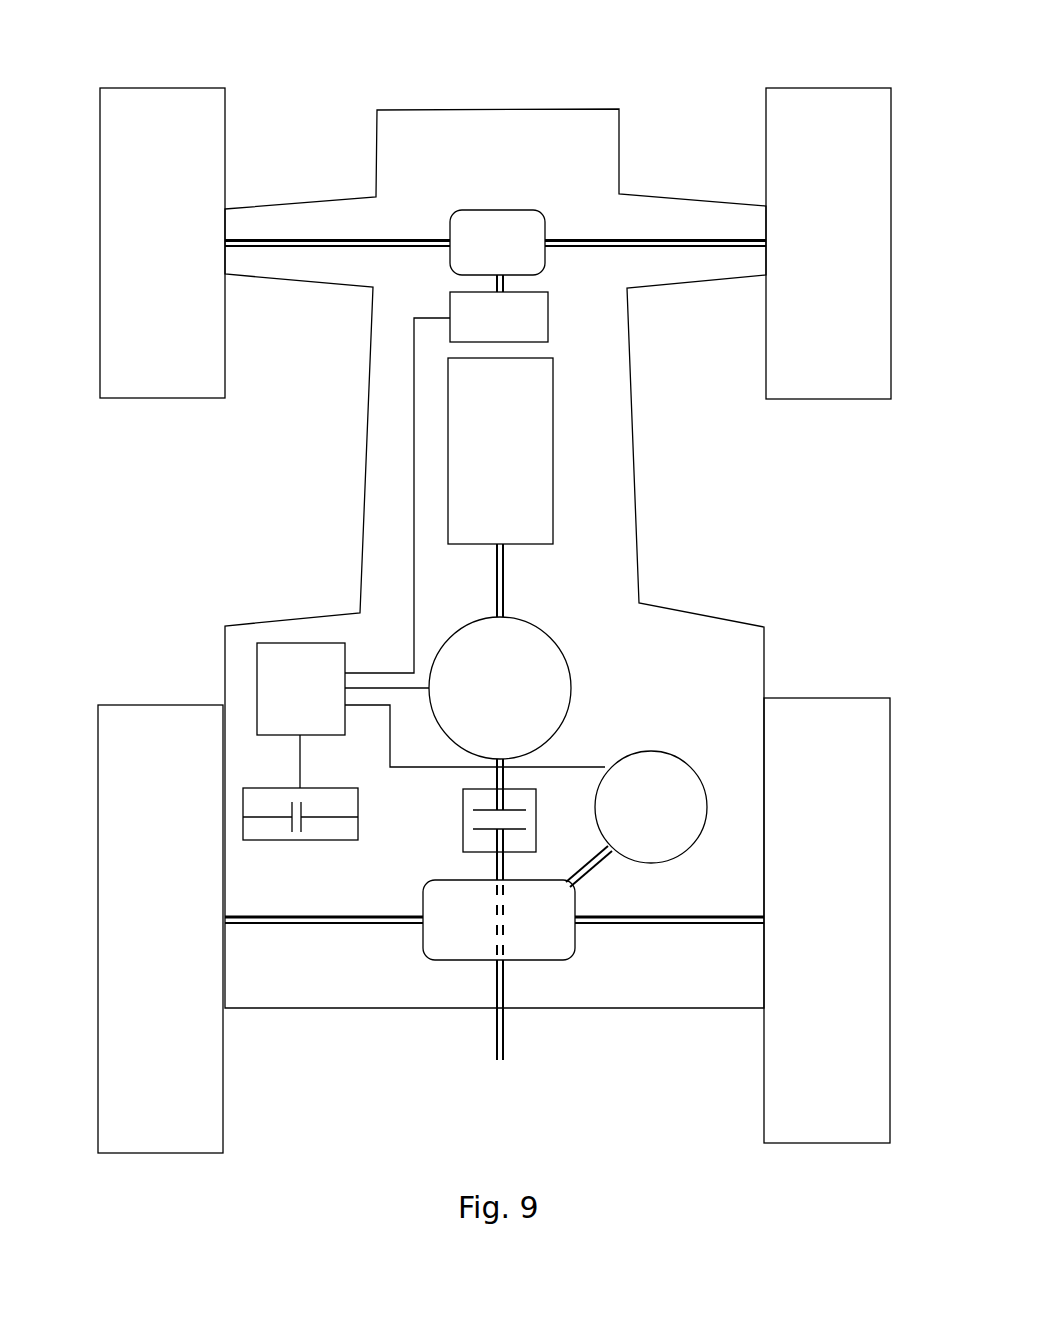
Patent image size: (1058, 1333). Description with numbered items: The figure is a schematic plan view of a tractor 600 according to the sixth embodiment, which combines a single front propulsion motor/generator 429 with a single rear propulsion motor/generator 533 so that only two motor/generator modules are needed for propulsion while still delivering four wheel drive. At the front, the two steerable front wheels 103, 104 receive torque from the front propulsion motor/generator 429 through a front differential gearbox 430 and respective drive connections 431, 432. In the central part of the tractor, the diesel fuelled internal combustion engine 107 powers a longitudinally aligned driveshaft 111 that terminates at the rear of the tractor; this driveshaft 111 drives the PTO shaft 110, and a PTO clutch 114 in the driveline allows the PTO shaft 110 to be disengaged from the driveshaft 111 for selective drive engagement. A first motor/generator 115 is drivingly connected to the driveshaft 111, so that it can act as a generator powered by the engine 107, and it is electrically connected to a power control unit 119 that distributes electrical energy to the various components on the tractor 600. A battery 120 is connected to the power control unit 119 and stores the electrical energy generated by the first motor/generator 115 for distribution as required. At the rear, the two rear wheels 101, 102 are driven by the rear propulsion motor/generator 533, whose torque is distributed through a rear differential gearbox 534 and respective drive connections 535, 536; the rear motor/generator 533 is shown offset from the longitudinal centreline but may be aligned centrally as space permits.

The tractor 600 is at (339, 50).
The rear wheel 101 is at (118, 1153).
The rear wheel 102 is at (876, 1143).
The front wheel 103 is at (122, 398).
The front wheel 104 is at (863, 399).
The internal combustion engine 107 is at (514, 472).
The PTO shaft 110 is at (505, 1035).
The driveshaft 111 is at (505, 586).
The PTO clutch 114 is at (463, 828).
The first motor/generator 115 is at (573, 668).
The power control unit 119 is at (312, 708).
The battery 120 is at (318, 840).
The front propulsion motor/generator 429 is at (548, 316).
The front differential gearbox 430 is at (530, 210).
The drive connection 431 is at (292, 240).
The drive connection 432 is at (686, 240).
The rear propulsion motor/generator 533 is at (687, 760).
The rear differential gearbox 534 is at (450, 962).
The drive connection 535 is at (318, 928).
The drive connection 536 is at (697, 925).